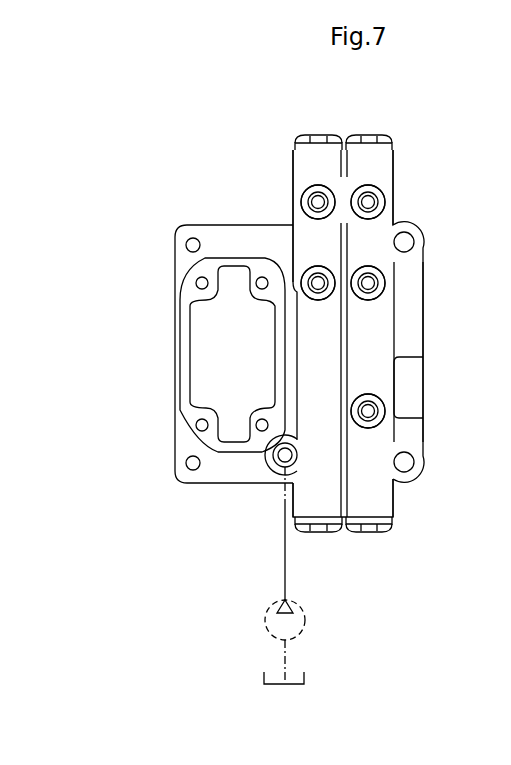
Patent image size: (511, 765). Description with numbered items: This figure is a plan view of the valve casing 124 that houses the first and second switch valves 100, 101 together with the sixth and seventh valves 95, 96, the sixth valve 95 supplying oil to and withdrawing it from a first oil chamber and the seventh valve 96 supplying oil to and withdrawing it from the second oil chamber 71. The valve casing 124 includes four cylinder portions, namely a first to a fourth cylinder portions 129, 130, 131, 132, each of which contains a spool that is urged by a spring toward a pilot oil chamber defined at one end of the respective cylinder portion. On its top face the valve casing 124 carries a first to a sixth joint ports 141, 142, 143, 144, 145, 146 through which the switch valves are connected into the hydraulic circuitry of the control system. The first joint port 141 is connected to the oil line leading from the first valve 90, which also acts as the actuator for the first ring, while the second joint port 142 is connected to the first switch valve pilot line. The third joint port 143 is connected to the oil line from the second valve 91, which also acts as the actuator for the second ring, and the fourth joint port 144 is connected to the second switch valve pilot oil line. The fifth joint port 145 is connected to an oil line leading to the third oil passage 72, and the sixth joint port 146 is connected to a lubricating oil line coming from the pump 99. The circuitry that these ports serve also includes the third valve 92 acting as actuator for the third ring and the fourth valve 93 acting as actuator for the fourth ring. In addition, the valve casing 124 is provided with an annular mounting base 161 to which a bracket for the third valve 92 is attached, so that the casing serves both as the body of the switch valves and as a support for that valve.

The second switch valve 101 is at (290, 160).
The first cylinder portion 129 is at (387, 152).
The third cylinder portion 131 is at (387, 508).
The first switch valve 100 is at (400, 175).
The valve casing 124 is at (421, 337).
The third oil passage 72 is at (428, 372).
The third joint port 143 is at (307, 192).
The first joint port 141 is at (372, 197).
The fourth joint port 144 is at (298, 293).
The second joint port 142 is at (368, 300).
The fifth joint port 145 is at (372, 414).
The second valve 91 is at (283, 202).
The first valve 90 is at (385, 202).
The fourth valve 93 is at (301, 283).
The third valve 92 is at (385, 283).
The second oil chamber 71 is at (368, 411).
The second cylinder portion 130 is at (308, 228).
The annular mounting base 161 is at (178, 383).
The sixth joint port 146 is at (281, 459).
The fourth cylinder portion 132 is at (304, 491).
The sixth valve 95 is at (401, 492).
The seventh valve 96 is at (289, 546).
The pump 99 is at (313, 610).